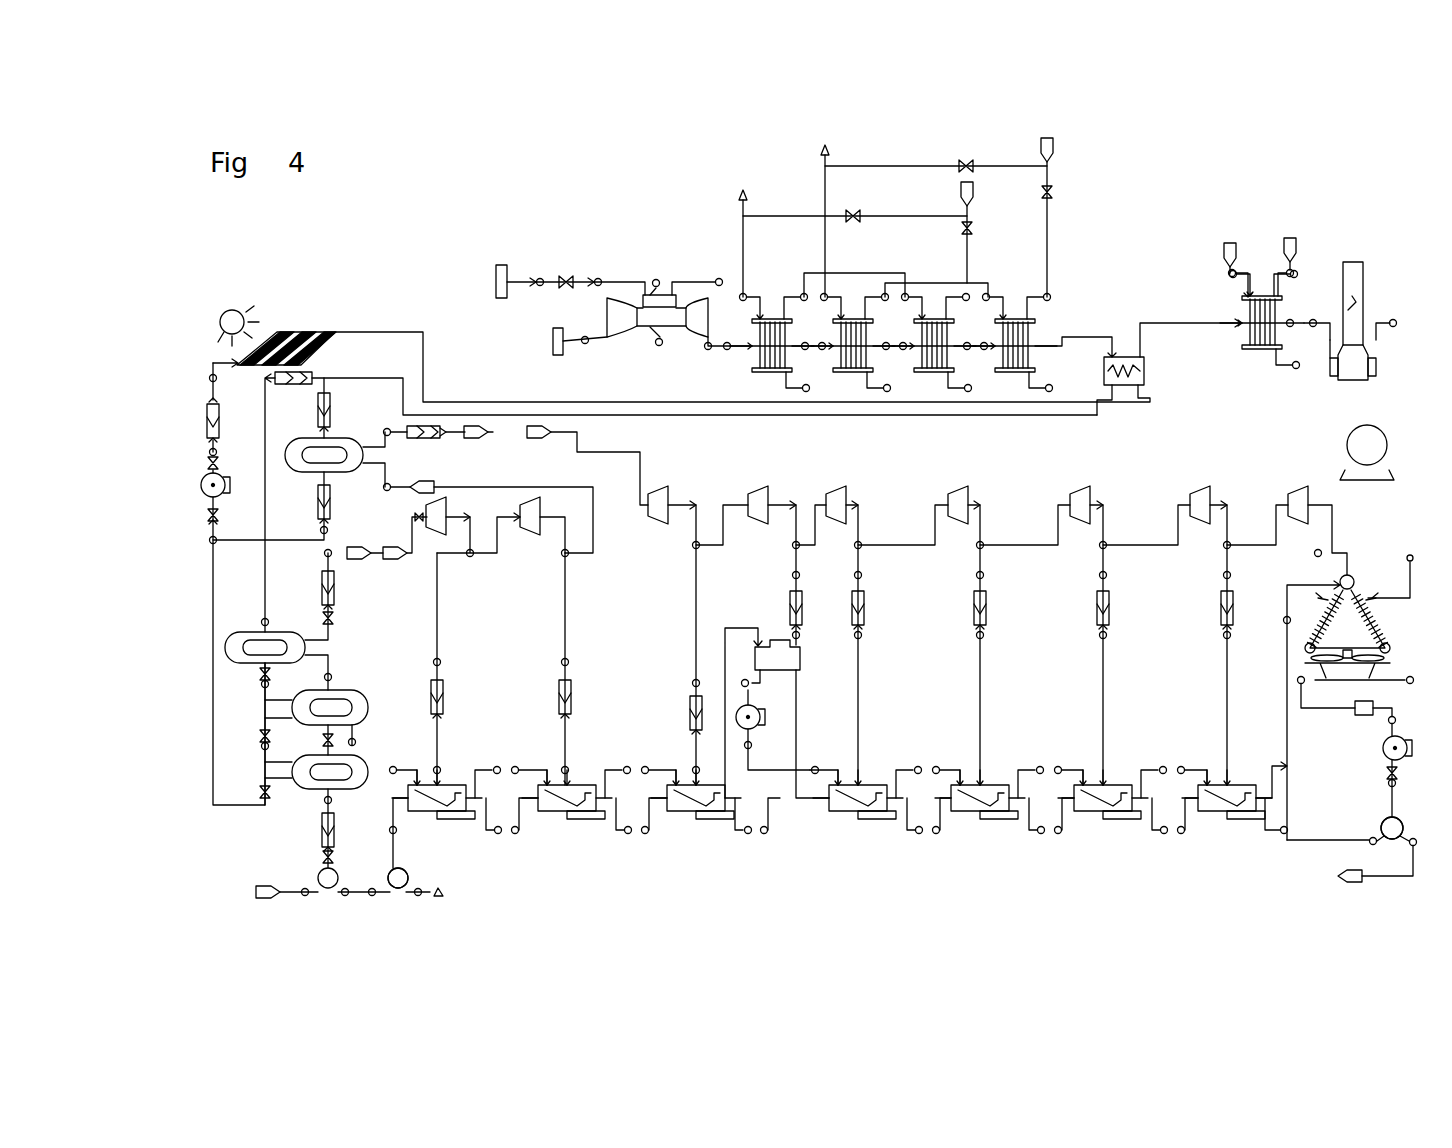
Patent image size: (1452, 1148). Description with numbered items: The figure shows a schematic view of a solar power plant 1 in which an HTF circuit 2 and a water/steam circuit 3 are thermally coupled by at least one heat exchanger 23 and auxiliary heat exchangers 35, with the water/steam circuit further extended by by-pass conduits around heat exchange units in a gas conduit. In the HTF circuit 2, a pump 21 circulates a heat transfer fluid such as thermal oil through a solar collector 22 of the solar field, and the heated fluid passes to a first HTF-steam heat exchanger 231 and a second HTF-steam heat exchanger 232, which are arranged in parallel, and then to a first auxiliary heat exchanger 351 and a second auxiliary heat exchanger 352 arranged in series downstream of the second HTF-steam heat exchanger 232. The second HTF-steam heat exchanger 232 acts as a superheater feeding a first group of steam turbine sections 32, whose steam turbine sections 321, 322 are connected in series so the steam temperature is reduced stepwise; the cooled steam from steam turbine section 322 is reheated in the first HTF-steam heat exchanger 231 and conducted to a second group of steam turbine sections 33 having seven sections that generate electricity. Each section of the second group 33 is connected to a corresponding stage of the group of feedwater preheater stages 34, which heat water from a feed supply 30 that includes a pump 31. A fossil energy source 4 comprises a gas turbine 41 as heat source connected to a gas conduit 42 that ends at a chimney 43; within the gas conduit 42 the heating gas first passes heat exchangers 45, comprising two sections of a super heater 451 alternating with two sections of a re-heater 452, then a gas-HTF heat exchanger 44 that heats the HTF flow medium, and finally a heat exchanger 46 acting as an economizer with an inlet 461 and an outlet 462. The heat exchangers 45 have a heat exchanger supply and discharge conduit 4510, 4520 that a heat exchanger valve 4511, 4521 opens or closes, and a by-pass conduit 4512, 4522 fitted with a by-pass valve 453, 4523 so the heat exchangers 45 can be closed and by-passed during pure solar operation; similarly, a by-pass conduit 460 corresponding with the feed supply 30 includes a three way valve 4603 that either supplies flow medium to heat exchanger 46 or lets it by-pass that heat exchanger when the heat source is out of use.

The solar power plant 1 is at (1296, 178).
The HTF circuit 2 is at (212, 390).
The pump 21 is at (205, 482).
The solar collector 22 is at (295, 335).
The heat exchanger 23 is at (165, 523).
The first HTF-steam heat exchanger 231 is at (295, 462).
The second HTF-steam heat exchanger 232 is at (240, 640).
The water/steam circuit 3 is at (640, 455).
The feed supply 30 is at (1348, 840).
The pump 31 is at (1382, 750).
The first group of steam turbine sections 32 is at (560, 615).
The steam turbine section 321 is at (442, 540).
The steam turbine section 322 is at (530, 540).
The second group of steam turbine sections 33 is at (1310, 486).
The group of feedwater preheater stages 34 is at (1262, 848).
The auxiliary heat exchangers 35 is at (280, 828).
The first auxiliary heat exchanger 351 is at (310, 787).
The second auxiliary heat exchanger 352 is at (298, 712).
The fossil energy source 4 is at (565, 248).
The gas turbine 41 is at (625, 280).
The gas conduit 42 is at (1060, 345).
The chimney 43 is at (1362, 278).
The gas-HTF heat exchanger 44 is at (1147, 370).
The heat exchangers 45 is at (1090, 123).
The super heater 451 is at (743, 195).
The re-heater 452 is at (823, 150).
The control valve 453 is at (852, 214).
The heat exchanger supply and discharge conduit 4510 is at (1003, 272).
The heat exchanger valve 4511 is at (972, 228).
The by-pass conduit 4512 is at (895, 218).
The heat exchanger supply and discharge conduit 4520 is at (1050, 250).
The heat exchanger valve 4521 is at (1052, 190).
The by-pass conduit 4522 is at (853, 165).
The by-pass valve 4523 is at (966, 162).
The heat exchanger 46 is at (1315, 218).
The by-pass conduit 460 is at (1380, 838).
The inlet 461 is at (1317, 885).
The outlet 462 is at (262, 892).
The three way valve 4603 is at (338, 870).